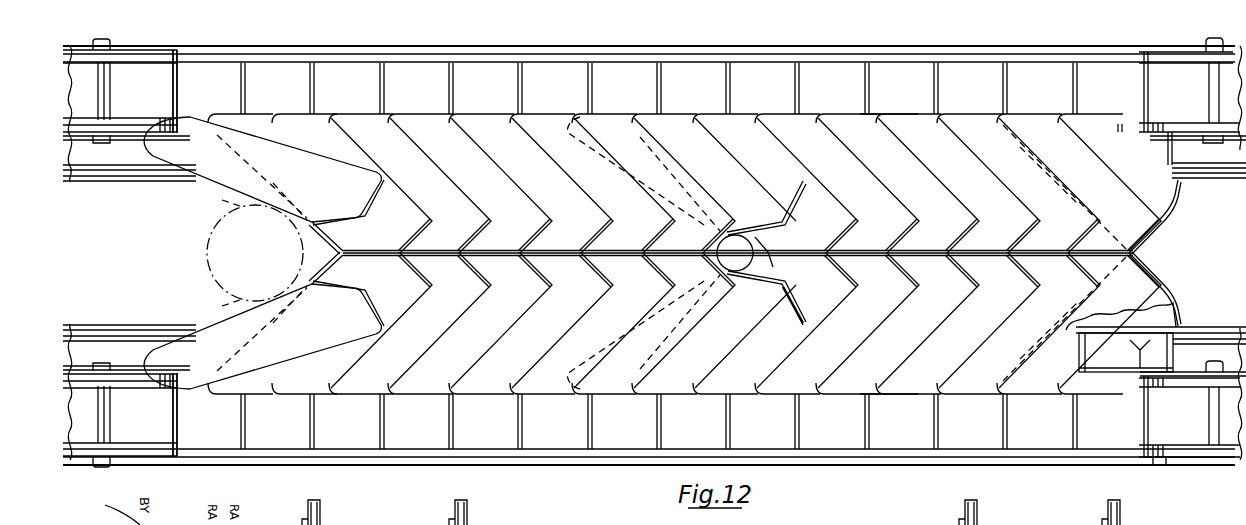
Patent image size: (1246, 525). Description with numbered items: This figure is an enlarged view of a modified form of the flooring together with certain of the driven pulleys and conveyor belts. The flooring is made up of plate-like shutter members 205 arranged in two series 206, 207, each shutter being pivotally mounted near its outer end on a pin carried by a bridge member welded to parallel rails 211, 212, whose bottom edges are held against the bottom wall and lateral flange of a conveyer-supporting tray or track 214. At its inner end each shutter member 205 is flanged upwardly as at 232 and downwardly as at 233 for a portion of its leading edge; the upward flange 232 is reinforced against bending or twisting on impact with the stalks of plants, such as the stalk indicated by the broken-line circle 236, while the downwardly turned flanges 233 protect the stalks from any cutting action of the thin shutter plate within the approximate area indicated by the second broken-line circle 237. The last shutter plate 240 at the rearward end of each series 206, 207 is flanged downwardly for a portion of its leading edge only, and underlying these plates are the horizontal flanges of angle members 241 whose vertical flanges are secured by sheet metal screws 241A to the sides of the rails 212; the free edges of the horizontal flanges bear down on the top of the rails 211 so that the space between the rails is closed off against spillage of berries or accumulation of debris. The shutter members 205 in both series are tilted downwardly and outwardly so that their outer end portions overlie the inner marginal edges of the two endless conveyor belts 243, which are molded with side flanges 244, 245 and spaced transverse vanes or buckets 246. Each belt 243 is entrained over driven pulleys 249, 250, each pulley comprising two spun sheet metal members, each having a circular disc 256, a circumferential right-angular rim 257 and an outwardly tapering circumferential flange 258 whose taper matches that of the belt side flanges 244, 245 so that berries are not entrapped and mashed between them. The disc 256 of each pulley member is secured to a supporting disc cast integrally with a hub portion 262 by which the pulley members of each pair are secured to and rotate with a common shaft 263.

The plate-like shutter member 205 is at (754, 199).
The series of shutter members 206 is at (899, 112).
The series of shutter members 207 is at (896, 398).
The rail 211 is at (118, 141).
The rail 212 is at (137, 177).
The conveyer-supporting tray or track 214 is at (99, 181).
The upwardly turned flange 232 is at (360, 212).
The downwardly turned flange 233 is at (217, 254).
The broken-line circle 236 is at (756, 244).
The second broken-line circle 237 is at (208, 256).
The last shutter plate 240 is at (1124, 171).
The angle member 241 is at (1176, 188).
The sheet metal screw 241A is at (1147, 354).
The endless conveyor belt 243 is at (634, 103).
The side flange 244 is at (338, 47).
The side flange 245 is at (82, 368).
The transverse vane or bucket 246 is at (520, 77).
The driven pulley 249 is at (1173, 47).
The driven pulley 250 is at (141, 48).
The circular disc 256 is at (117, 121).
The circumferential right-angular rim 257 is at (126, 61).
The outwardly tapering circumferential flange 258 is at (1185, 139).
The hub portion 262 is at (1219, 43).
The common shaft 263 is at (111, 92).